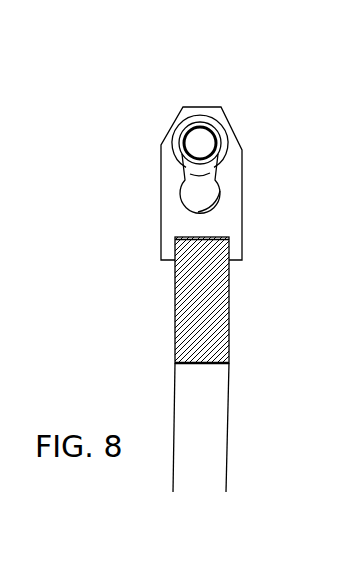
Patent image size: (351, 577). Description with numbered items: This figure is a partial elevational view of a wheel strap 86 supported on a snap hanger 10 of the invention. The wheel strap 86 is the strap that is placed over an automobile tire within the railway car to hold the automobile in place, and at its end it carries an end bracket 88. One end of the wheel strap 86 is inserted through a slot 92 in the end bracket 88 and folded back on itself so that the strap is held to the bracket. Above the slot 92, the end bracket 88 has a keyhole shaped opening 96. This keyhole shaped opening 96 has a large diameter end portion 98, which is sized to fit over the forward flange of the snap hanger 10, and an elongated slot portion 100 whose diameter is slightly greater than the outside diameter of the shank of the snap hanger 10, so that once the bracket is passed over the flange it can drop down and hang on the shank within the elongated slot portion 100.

The snap hanger 10 is at (200, 137).
The wheel strap 86 is at (207, 396).
The end bracket 88 is at (244, 163).
The slot 92 is at (204, 233).
The keyhole shaped opening 96 is at (205, 179).
The large diameter end portion 98 is at (220, 191).
The elongated slot portion 100 is at (190, 156).